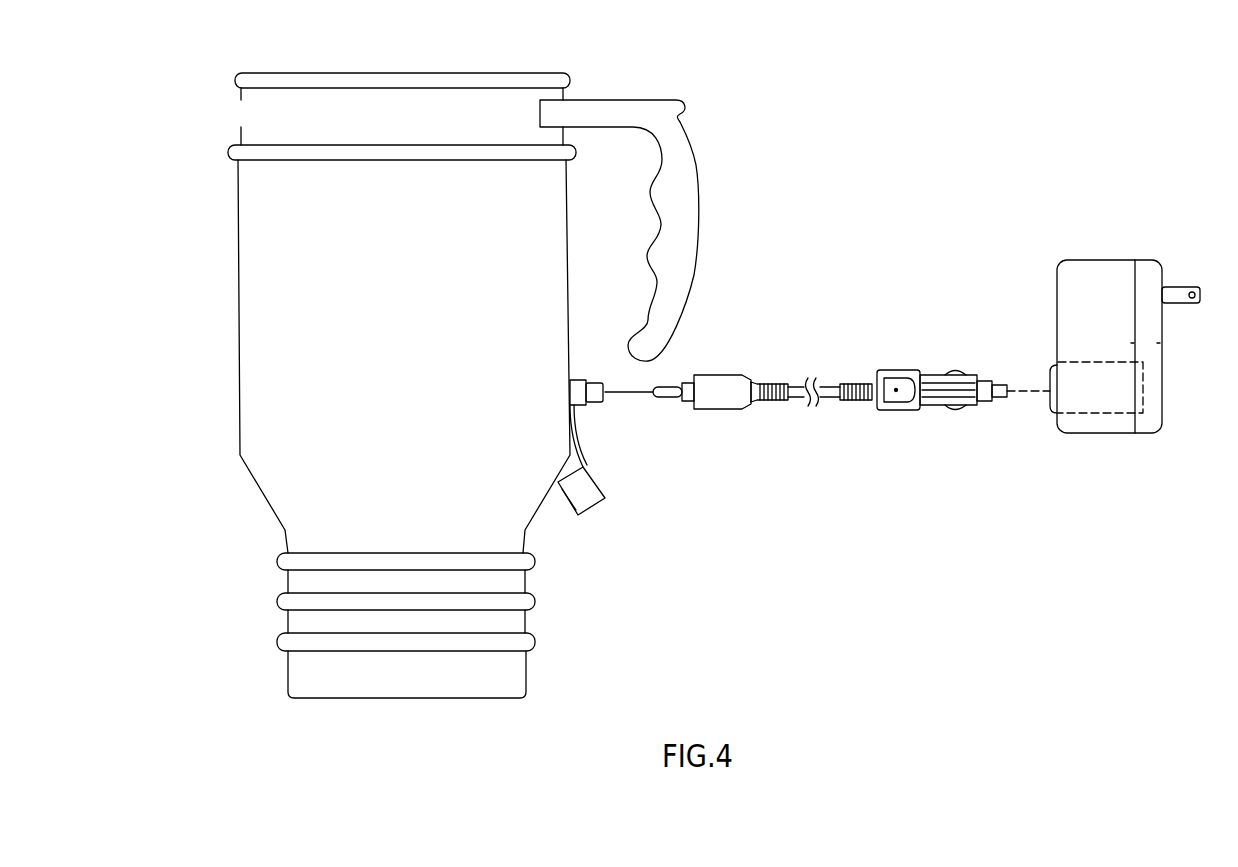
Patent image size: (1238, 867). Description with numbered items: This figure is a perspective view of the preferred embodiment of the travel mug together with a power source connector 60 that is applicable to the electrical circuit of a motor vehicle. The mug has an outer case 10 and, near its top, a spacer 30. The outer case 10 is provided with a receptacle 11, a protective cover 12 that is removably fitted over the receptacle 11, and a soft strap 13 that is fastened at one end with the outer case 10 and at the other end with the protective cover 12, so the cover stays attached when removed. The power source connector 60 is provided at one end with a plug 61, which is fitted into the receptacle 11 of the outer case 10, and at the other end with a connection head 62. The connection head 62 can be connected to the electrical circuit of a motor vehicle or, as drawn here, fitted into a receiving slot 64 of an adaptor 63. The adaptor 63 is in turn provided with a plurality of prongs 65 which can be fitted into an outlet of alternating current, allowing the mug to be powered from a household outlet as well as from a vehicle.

The outer case 10 is at (245, 333).
The receptacle 11 is at (593, 375).
The protective cover 12 is at (588, 500).
The soft strap 13 is at (578, 441).
The spacer 30 is at (247, 118).
The power source connector 60 is at (829, 380).
The plug 61 is at (682, 378).
The connection head 62 is at (937, 372).
The adaptor 63 is at (1066, 276).
The receiving slot 64 is at (1096, 414).
The prongs 65 is at (1178, 290).